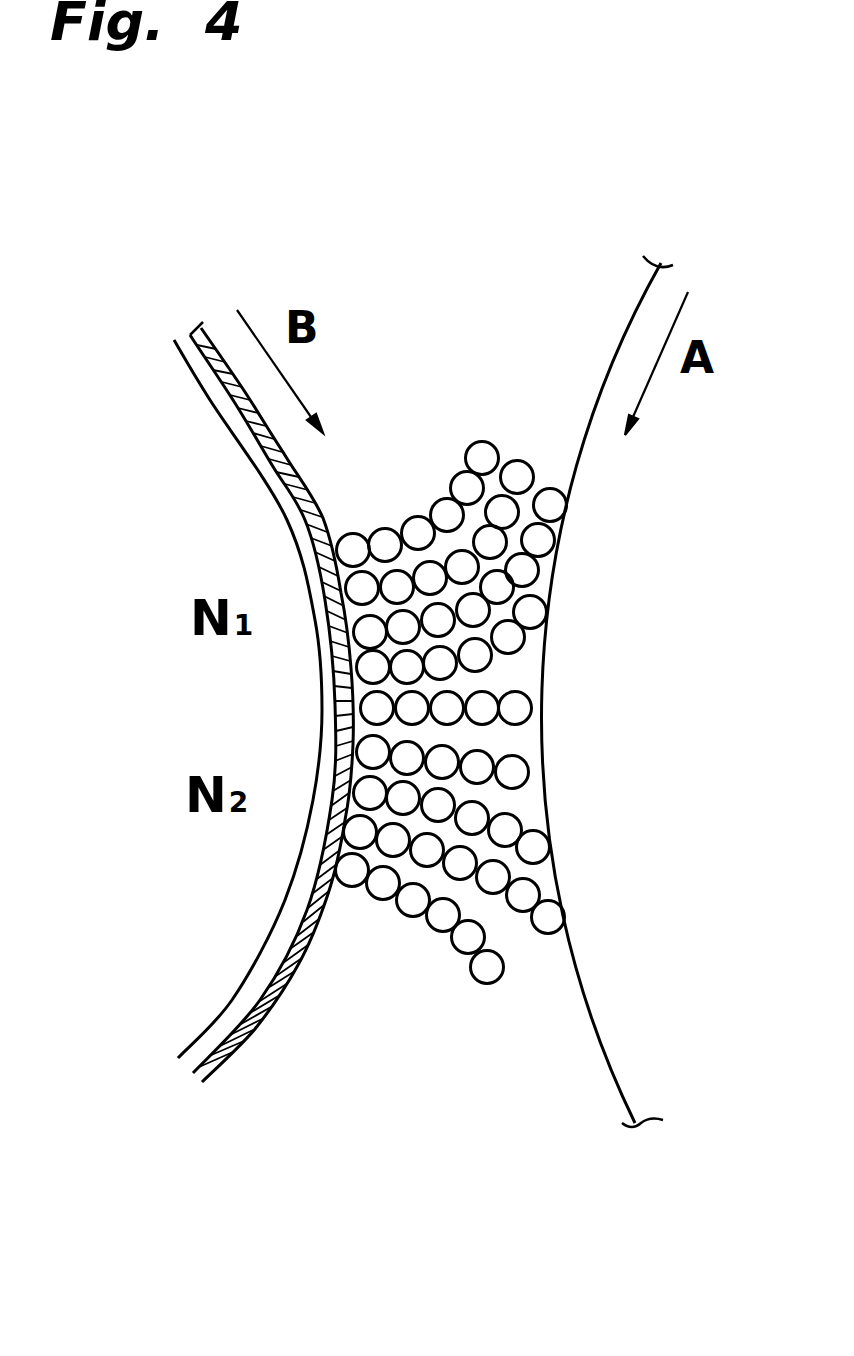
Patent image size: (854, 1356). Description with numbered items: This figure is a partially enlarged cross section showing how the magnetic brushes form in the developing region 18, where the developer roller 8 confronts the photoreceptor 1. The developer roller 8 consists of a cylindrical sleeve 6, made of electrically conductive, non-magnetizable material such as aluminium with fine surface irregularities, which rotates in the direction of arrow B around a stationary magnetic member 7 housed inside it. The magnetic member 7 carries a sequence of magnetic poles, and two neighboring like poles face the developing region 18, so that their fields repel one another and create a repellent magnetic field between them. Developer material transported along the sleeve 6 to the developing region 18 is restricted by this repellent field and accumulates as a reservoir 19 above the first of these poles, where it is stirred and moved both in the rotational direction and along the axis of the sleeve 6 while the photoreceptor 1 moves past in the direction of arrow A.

The photoreceptor 1 is at (615, 1075).
The cylindrical sleeve 6 is at (268, 1000).
The stationary magnetic member 7 is at (202, 1008).
The developer roller 8 is at (265, 819).
The developing region 18 is at (522, 742).
The reservoir 19 is at (515, 458).